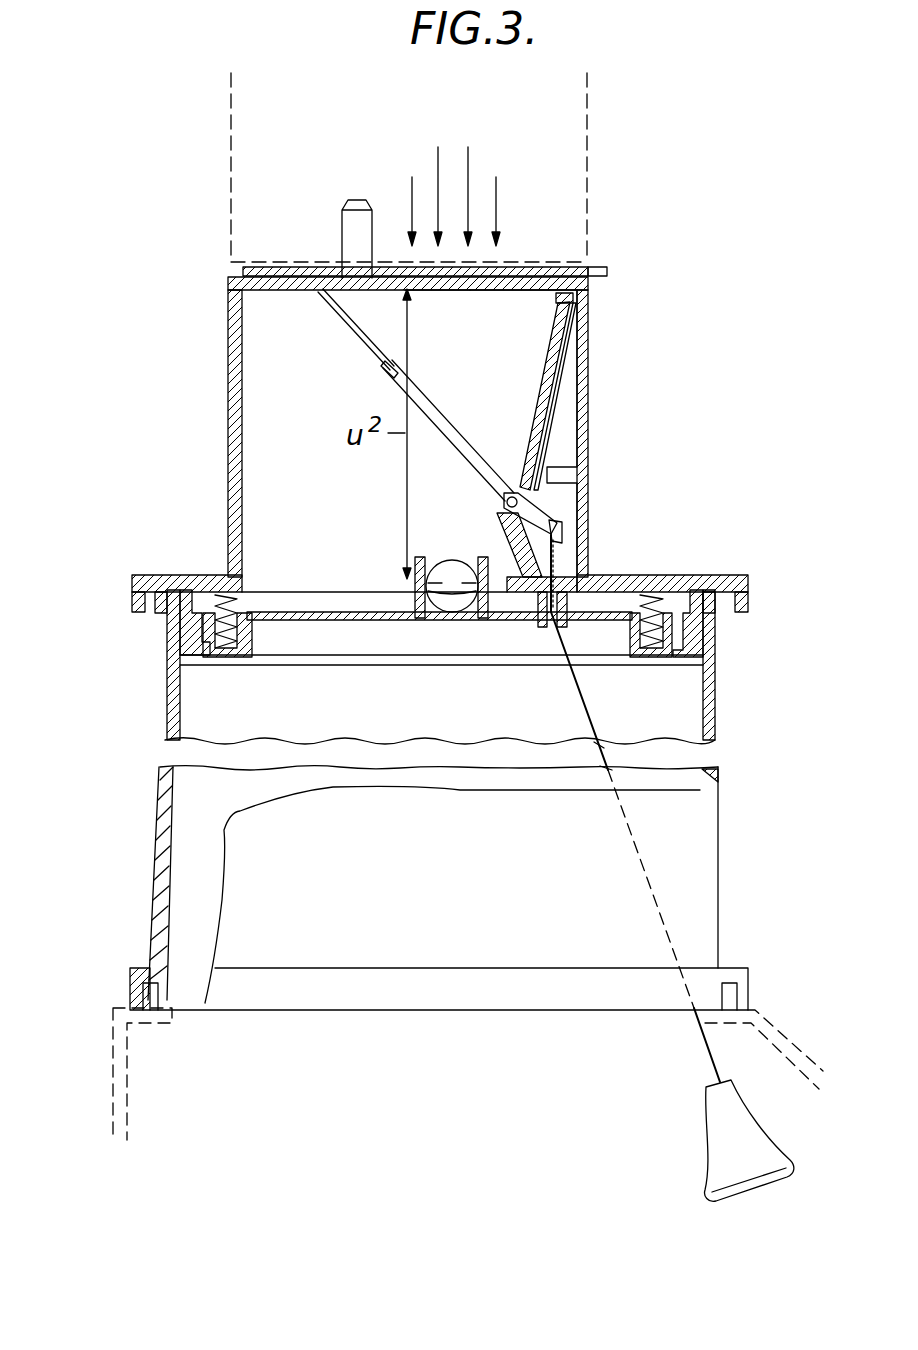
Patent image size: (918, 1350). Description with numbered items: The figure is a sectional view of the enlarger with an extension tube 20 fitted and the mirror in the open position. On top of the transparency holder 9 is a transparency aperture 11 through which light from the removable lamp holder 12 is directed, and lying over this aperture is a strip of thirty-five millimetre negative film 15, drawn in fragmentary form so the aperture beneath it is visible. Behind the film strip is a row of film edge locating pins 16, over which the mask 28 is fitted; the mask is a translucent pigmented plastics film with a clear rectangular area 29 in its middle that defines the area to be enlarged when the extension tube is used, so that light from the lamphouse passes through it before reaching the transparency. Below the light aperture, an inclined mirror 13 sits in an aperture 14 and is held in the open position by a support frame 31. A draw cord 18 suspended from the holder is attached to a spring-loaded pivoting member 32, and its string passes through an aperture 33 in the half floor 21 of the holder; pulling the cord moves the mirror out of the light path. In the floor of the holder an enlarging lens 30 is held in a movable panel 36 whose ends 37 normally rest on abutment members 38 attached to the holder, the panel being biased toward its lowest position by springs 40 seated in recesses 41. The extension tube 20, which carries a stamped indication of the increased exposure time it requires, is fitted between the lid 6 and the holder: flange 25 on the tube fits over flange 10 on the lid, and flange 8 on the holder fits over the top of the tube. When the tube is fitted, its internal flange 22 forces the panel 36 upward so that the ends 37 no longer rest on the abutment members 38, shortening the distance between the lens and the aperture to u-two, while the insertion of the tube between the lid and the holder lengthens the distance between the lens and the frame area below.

The lid 6 is at (120, 1055).
The flange 8 is at (148, 580).
The transparency holder 9 is at (230, 346).
The flange 10 is at (143, 995).
The transparency aperture 11 is at (428, 292).
The removable lamp holder 12 is at (588, 122).
The inclined mirror 13 is at (555, 392).
The aperture 14 is at (580, 352).
The strip of 35 mm negative film 15 is at (488, 291).
The film edge locating pins 16 is at (348, 222).
The draw cord 18 is at (732, 1100).
The extension tube 20 is at (718, 811).
The half floor 21 is at (522, 578).
The internal flange 22 is at (198, 660).
The flange 25 is at (135, 970).
The mask 28 is at (597, 268).
The clear rectangular area 29 is at (470, 266).
The enlarging lens 30 is at (453, 580).
The support frame 31 is at (335, 312).
The spring-loaded pivoting member 32 is at (530, 500).
The aperture 33 is at (568, 575).
The movable panel 36 is at (345, 610).
The ends 37 is at (200, 605).
The abutment members 38 is at (185, 640).
The springs 40 is at (220, 590).
The recesses 41 is at (238, 655).